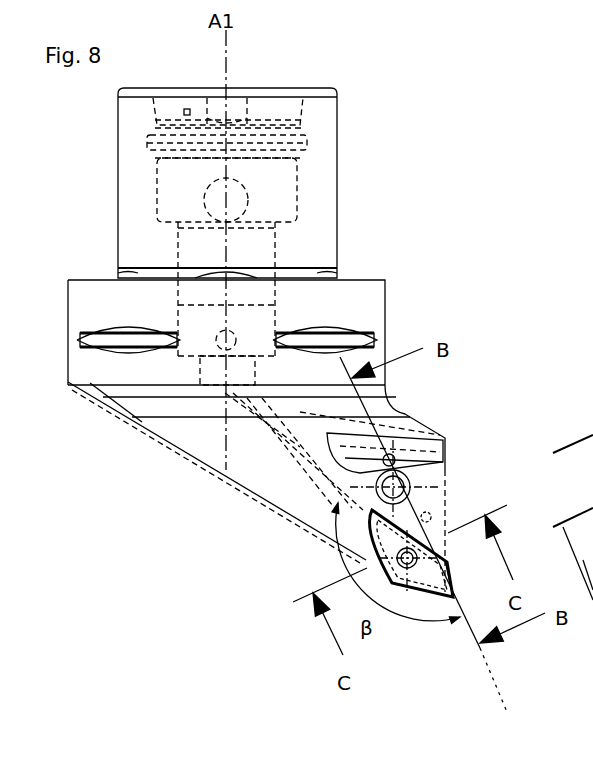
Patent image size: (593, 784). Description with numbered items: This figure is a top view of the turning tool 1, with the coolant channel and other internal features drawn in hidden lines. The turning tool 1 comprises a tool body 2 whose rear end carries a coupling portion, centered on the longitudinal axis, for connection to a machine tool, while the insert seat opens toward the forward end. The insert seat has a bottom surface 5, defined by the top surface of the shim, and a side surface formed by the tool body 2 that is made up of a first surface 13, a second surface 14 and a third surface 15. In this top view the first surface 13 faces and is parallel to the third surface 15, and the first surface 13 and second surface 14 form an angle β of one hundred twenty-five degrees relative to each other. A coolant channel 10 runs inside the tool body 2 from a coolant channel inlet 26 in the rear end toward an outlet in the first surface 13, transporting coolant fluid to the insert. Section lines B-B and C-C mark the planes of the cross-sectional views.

The turning tool 1 is at (417, 234).
The tool body 2 is at (183, 433).
The bottom surface 5 is at (592, 425).
The coolant channel 10 is at (295, 452).
The first surface 13 is at (447, 533).
The second surface 14 is at (400, 525).
The third surface 15 is at (370, 545).
The coolant channel inlet 26 is at (269, 69).